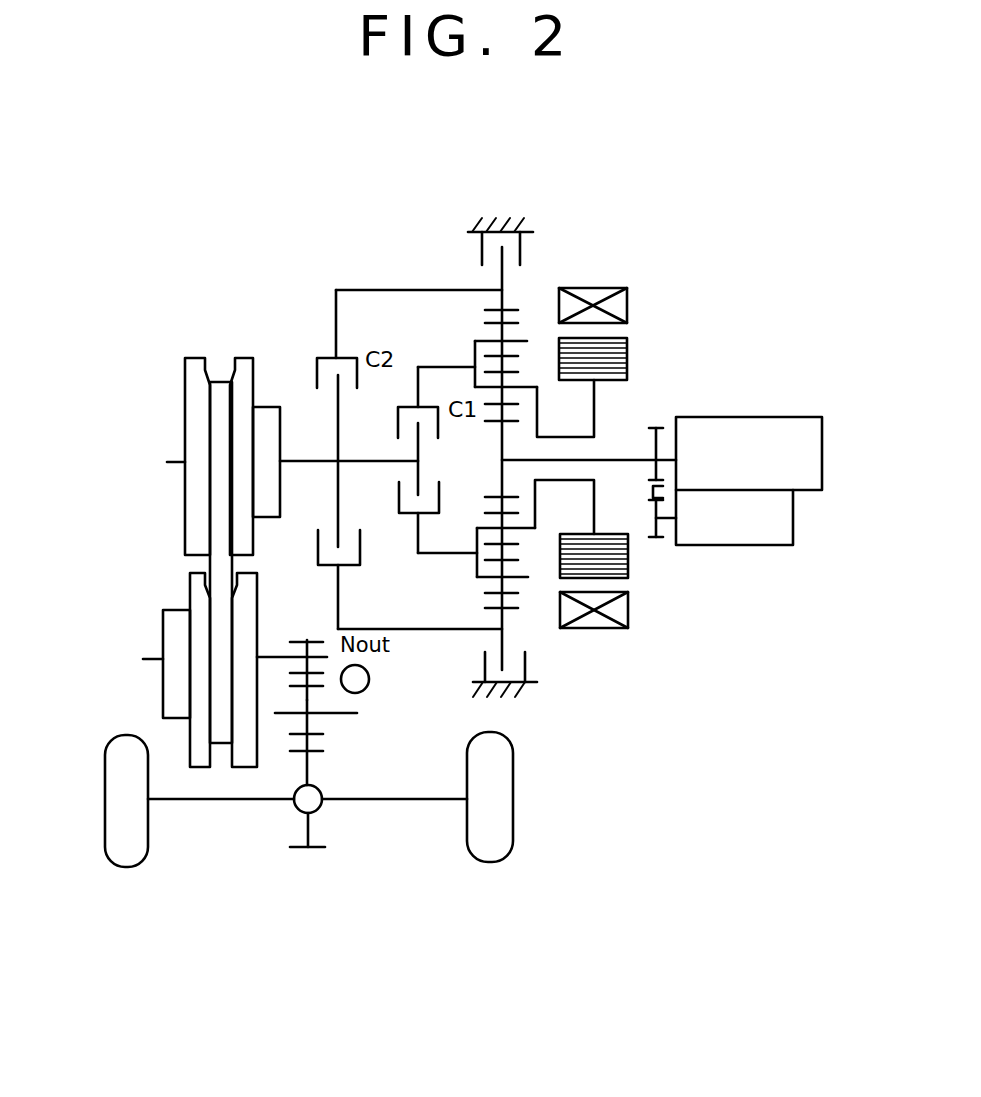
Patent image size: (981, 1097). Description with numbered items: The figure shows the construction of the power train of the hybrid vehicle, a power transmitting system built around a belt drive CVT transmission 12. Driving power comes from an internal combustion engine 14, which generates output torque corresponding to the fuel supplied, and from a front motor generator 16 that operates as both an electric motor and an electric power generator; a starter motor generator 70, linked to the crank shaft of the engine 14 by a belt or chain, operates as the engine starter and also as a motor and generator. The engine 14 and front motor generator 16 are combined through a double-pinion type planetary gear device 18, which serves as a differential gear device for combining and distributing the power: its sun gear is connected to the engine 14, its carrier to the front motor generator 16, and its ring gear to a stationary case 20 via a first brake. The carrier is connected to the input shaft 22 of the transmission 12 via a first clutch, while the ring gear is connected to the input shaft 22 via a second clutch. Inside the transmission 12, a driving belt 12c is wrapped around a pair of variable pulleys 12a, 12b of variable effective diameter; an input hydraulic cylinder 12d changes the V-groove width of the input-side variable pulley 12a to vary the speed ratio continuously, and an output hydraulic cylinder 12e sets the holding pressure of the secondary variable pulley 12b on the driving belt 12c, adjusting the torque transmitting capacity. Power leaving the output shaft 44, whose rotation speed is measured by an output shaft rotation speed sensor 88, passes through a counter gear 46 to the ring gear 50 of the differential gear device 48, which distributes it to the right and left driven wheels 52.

The transmission 12 is at (166, 366).
The input-side variable pulley 12a is at (195, 423).
The secondary variable pulley 12b is at (200, 593).
The driving belt 12c is at (223, 563).
The input hydraulic cylinder 12d is at (272, 492).
The output hydraulic cylinder 12e is at (170, 637).
The engine 14 is at (738, 417).
The front motor generator 16 is at (606, 279).
The double-pinion type planetary gear device 18 is at (458, 276).
The case 20 is at (508, 223).
The input shaft 22 is at (305, 460).
The output shaft 44 is at (272, 655).
The counter gear 46 is at (318, 735).
The differential gear device 48 is at (306, 802).
The ring gear 50 is at (317, 850).
The driven wheels 52 is at (118, 860).
The starter motor generator 70 is at (712, 547).
The output shaft rotation speed sensor 88 is at (369, 678).